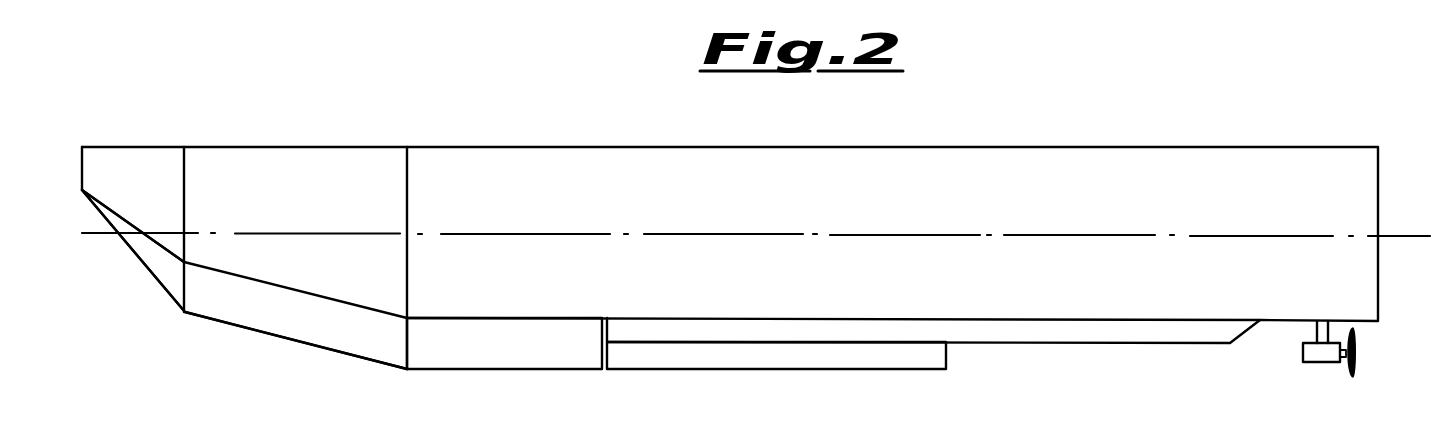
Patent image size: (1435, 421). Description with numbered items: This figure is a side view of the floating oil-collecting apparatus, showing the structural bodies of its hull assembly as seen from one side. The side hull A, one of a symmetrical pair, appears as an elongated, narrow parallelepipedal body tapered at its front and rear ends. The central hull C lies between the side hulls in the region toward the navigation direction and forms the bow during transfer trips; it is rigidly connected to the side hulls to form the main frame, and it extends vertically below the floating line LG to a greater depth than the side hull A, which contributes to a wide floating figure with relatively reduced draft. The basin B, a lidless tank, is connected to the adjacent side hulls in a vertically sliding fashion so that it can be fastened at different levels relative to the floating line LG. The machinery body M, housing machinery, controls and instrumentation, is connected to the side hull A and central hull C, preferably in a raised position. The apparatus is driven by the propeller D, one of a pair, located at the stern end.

The side hull A is at (1057, 165).
The basin B is at (848, 362).
The central hull C is at (267, 324).
The propeller D is at (1356, 368).
The machinery body M is at (527, 354).
The floating line LG is at (756, 223).